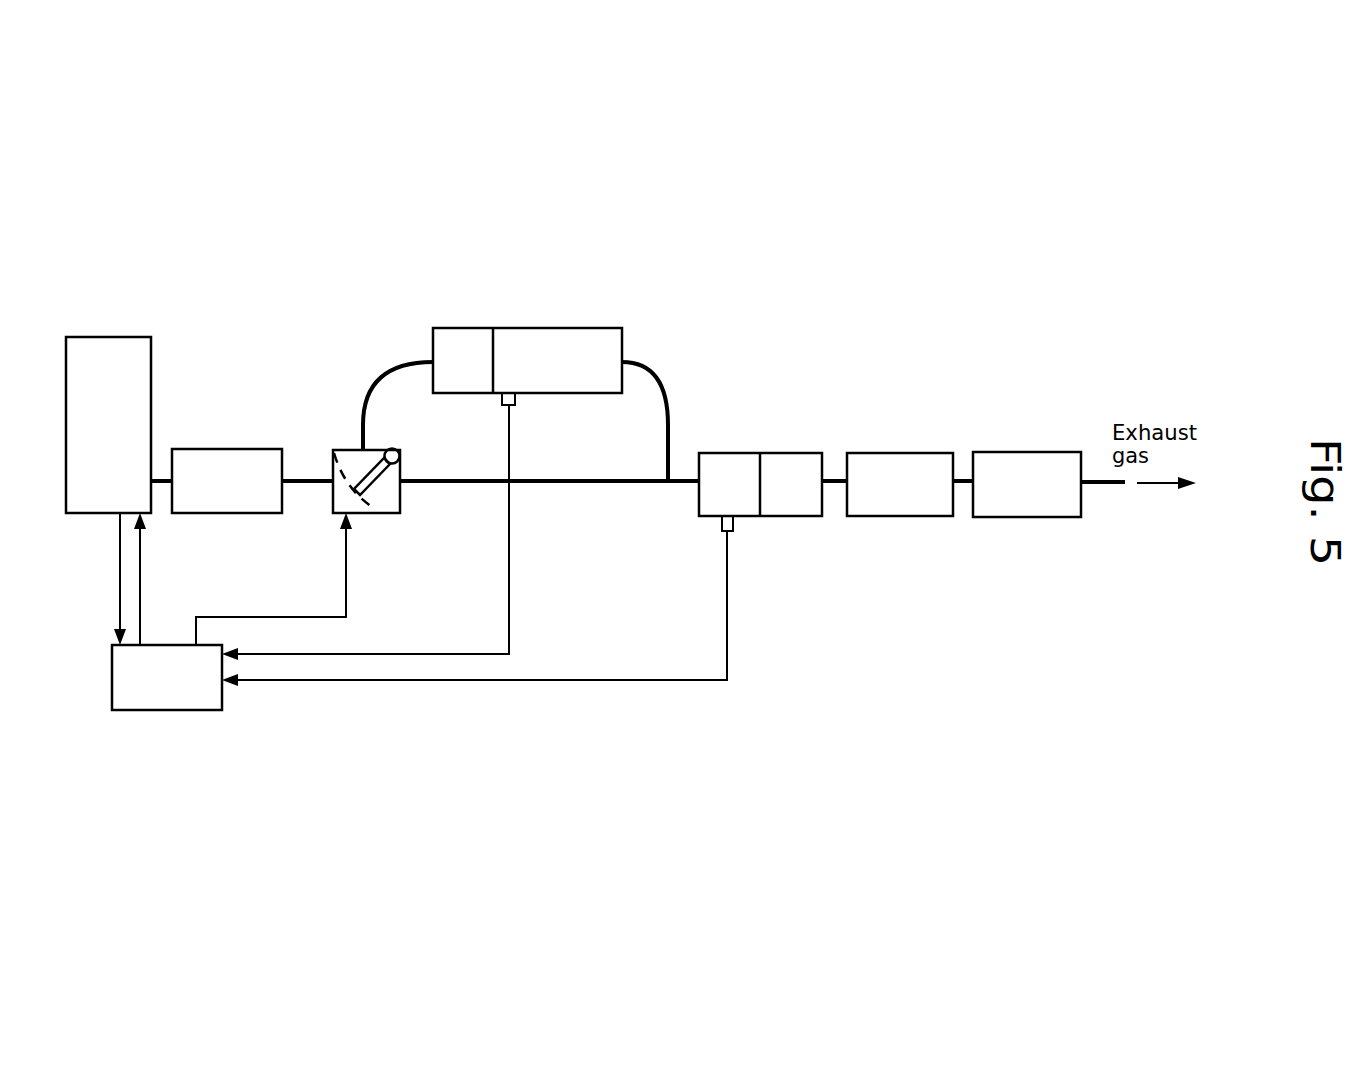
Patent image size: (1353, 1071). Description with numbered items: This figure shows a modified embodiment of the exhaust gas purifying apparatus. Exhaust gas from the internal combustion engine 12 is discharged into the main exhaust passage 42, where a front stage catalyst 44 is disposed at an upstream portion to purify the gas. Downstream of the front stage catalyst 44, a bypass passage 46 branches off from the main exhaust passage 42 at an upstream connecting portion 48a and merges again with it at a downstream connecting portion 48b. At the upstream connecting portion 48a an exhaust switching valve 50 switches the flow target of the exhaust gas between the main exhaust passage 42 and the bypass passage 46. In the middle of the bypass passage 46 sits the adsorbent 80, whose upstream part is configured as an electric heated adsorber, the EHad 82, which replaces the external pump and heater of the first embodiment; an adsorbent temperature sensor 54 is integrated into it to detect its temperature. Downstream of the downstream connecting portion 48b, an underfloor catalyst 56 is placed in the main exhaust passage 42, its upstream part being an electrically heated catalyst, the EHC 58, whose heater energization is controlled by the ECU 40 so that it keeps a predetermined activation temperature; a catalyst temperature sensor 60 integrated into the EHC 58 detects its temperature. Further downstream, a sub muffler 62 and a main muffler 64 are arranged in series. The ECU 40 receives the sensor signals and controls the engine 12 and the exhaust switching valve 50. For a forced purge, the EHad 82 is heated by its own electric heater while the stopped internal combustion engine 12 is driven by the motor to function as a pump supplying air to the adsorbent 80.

The internal combustion engine 12 is at (128, 322).
The ECU 40 is at (150, 645).
The main exhaust passage 42 is at (157, 476).
The front stage catalyst 44 is at (228, 514).
The bypass passage 46 is at (648, 360).
The upstream connecting portion 48a is at (366, 450).
The downstream connecting portion 48b is at (651, 467).
The exhaust switching valve 50 is at (367, 489).
The adsorbent temperature sensor 54 is at (516, 402).
The underfloor catalyst 56 is at (793, 439).
The EHC 58 is at (720, 452).
The catalyst temperature sensor 60 is at (734, 530).
The sub muffler 62 is at (912, 452).
The main muffler 64 is at (1038, 452).
The adsorbent 80 is at (552, 318).
The EHad 82 is at (467, 328).